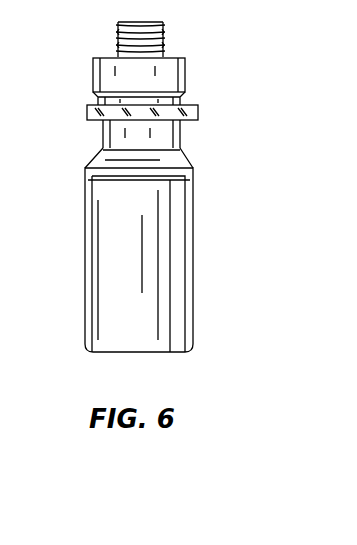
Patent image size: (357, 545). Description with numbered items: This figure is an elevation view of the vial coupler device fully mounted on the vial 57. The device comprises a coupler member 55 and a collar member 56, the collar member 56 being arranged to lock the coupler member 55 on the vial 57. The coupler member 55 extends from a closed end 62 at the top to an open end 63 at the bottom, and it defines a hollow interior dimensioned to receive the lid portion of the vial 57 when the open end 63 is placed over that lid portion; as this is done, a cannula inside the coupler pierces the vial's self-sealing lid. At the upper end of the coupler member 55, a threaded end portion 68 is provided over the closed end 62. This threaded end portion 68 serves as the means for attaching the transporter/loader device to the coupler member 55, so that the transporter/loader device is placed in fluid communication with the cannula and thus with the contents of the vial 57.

The closed end 62 is at (162, 26).
The threaded end portion 68 is at (164, 43).
The coupler member 55 is at (92, 73).
The collar member 56 is at (202, 115).
The open end 63 is at (181, 146).
The vial 57 is at (193, 240).